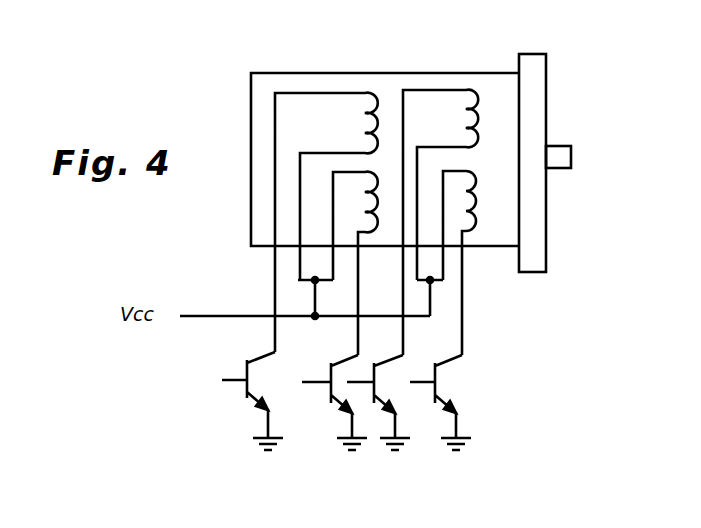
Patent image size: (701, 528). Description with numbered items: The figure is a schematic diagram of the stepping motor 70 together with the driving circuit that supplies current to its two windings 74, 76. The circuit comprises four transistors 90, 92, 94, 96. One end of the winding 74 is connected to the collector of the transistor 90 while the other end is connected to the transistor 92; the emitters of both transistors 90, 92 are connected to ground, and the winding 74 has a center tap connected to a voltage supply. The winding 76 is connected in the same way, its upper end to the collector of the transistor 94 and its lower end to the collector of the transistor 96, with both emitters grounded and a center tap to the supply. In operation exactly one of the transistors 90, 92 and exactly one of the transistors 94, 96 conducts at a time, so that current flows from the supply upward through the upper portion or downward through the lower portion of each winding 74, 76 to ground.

The stepping motor 70 is at (571, 168).
The winding 74 is at (366, 93).
The winding 76 is at (470, 90).
The transistor 90 is at (222, 380).
The transistor 92 is at (310, 382).
The transistor 94 is at (396, 363).
The transistor 96 is at (425, 382).